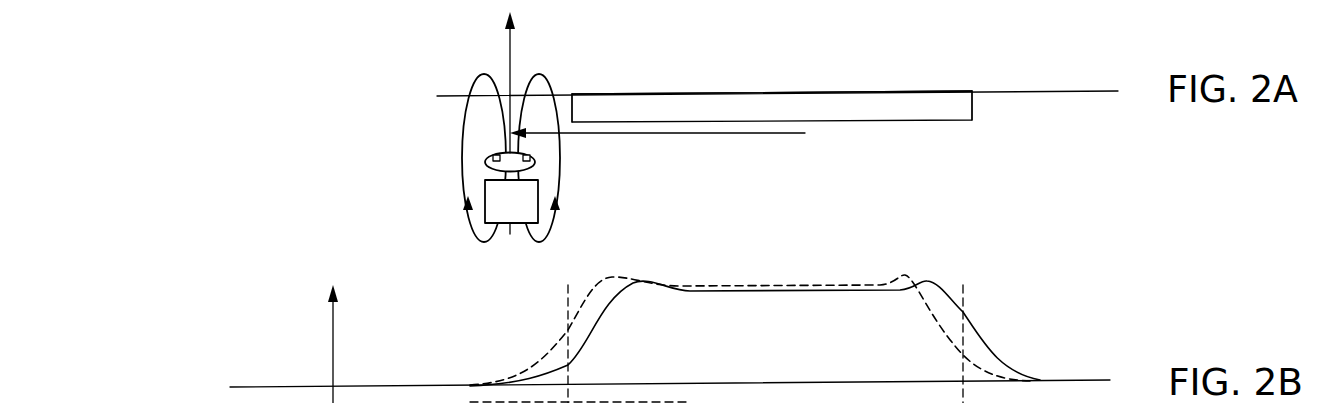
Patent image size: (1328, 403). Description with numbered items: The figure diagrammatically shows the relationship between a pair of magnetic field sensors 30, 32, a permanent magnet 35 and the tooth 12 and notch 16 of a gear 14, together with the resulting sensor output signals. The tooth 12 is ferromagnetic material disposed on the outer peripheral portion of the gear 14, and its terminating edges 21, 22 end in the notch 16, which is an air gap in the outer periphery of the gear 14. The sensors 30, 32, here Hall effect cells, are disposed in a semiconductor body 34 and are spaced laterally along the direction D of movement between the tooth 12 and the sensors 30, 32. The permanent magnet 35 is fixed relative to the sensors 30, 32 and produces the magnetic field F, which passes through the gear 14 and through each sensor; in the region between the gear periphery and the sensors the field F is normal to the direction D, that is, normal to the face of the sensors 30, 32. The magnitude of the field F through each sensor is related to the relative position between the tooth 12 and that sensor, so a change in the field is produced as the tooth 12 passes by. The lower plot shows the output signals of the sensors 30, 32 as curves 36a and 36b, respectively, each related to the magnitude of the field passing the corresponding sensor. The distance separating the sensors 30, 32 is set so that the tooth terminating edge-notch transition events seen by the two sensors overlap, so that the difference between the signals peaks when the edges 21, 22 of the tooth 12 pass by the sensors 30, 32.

In FIG. 2A, the tooth 12 is at (852, 122).
In FIG. 2A, the gear 14 is at (825, 68).
In FIG. 2A, the notch 16 is at (1070, 143).
In FIG. 2A, the edge of the tooth 21 is at (571, 106).
In FIG. 2A, the edge of the tooth 22 is at (975, 111).
In FIG. 2A, the magnetic field sensor 30 is at (528, 156).
In FIG. 2B, the magnetic field sensor 30 is at (648, 343).
In FIG. 2A, the magnetic field sensor 32 is at (493, 156).
In FIG. 2B, the magnetic field sensor 32 is at (648, 343).
In FIG. 2A, the semiconductor body 34 is at (535, 167).
In FIG. 2A, the permanent magnet 35 is at (486, 234).
In FIG. 2A, the magnetic field F is at (552, 222).
In FIG. 2A, the direction of movement D is at (690, 135).
In FIG. 2B, the curve 36a is at (548, 357).
In FIG. 2B, the curve 36b is at (583, 338).